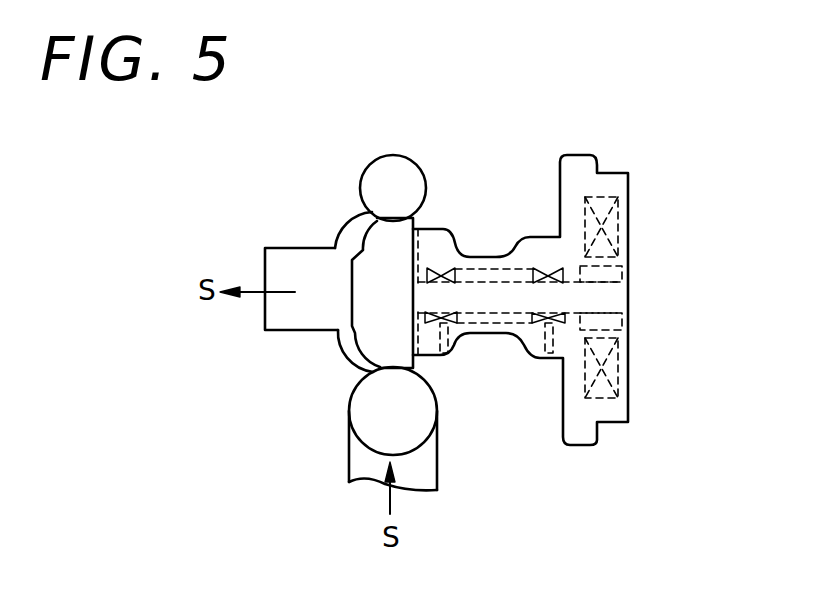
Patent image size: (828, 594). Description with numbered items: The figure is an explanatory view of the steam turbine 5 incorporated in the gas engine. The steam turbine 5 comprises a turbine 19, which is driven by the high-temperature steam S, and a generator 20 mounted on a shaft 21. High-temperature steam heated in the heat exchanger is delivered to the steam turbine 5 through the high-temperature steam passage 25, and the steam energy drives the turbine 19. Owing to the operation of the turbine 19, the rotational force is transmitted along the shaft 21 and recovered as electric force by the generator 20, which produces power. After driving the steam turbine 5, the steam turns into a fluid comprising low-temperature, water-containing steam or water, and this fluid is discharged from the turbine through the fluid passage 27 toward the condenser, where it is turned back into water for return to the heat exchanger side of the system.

The steam turbine 5 is at (487, 226).
The turbine 19 is at (372, 255).
The generator 20 is at (610, 220).
The shaft 21 is at (495, 303).
The high-temperature steam passage 25 is at (367, 462).
The fluid passage 27 is at (292, 268).